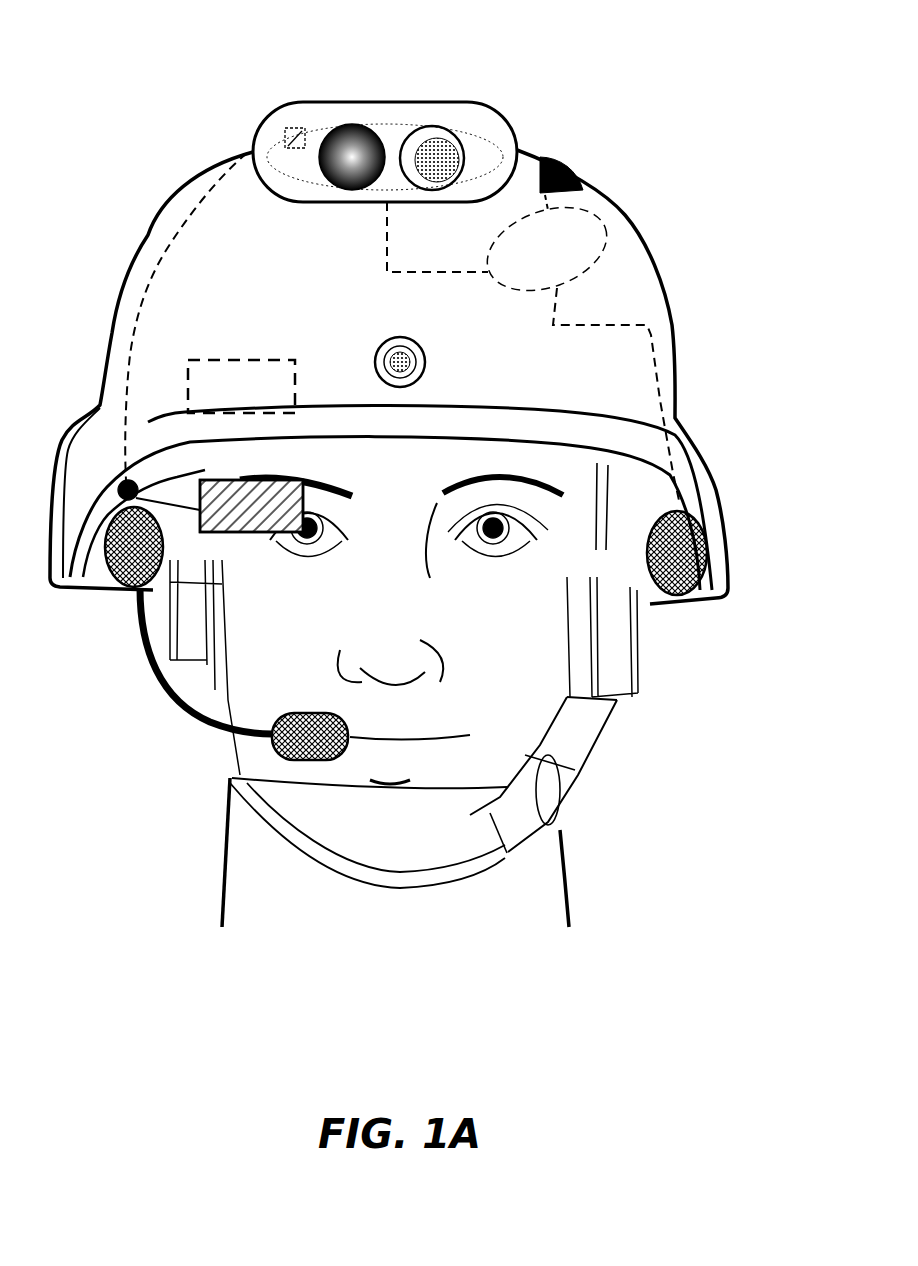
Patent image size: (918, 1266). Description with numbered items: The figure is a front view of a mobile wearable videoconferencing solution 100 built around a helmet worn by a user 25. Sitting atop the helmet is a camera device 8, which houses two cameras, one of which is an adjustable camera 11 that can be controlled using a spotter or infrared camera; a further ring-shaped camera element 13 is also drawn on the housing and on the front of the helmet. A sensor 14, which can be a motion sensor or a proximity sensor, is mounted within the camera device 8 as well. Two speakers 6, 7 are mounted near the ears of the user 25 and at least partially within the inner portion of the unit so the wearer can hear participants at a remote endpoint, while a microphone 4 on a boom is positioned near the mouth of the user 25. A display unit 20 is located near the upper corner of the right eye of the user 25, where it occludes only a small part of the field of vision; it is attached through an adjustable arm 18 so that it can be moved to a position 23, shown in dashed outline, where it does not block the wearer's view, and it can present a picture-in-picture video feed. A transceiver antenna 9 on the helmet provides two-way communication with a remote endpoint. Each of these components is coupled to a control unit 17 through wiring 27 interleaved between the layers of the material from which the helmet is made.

The mobile wearable videoconferencing solution 100 is at (126, 42).
The microphone 4 is at (265, 750).
The speaker 6 is at (94, 521).
The speaker 7 is at (714, 530).
The camera device 8 is at (492, 110).
The transceiver antenna 9 is at (580, 153).
The adjustable camera 11 is at (332, 124).
The sensor 13 is at (433, 124).
The sensor 14 is at (283, 126).
The control unit 17 is at (562, 264).
The adjustable arm 18 is at (155, 420).
The display unit 20 is at (232, 548).
The position 23 is at (172, 372).
The user 25 is at (680, 758).
The wiring 27 is at (657, 323).